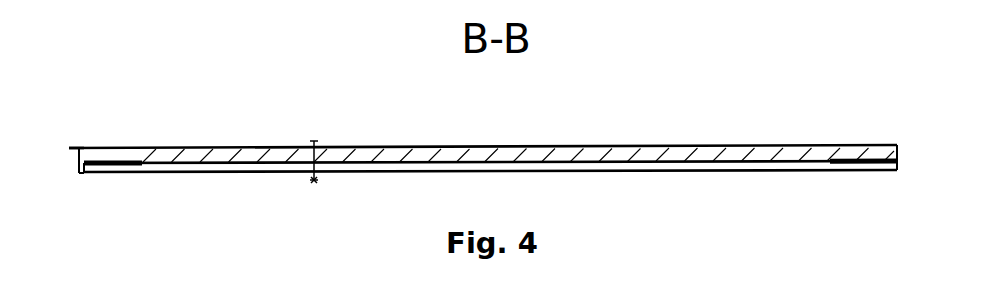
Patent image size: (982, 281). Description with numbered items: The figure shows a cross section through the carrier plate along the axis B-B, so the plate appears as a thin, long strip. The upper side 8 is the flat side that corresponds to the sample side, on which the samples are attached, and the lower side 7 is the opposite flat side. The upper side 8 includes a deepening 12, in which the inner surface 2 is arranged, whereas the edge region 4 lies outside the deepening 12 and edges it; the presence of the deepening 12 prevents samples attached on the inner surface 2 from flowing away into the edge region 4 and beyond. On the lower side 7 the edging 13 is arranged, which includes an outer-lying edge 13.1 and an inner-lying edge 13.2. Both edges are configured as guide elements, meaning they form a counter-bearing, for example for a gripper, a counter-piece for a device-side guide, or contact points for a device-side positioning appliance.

The inner surface 2 is at (337, 143).
The edge region 4 is at (838, 162).
The lower side 7 is at (652, 178).
The upper side 8 is at (651, 127).
The deepening 12 is at (142, 145).
The edging 13 is at (82, 178).
The outer-lying edge 13.1 is at (77, 175).
The inner-lying edge 13.2 is at (92, 177).